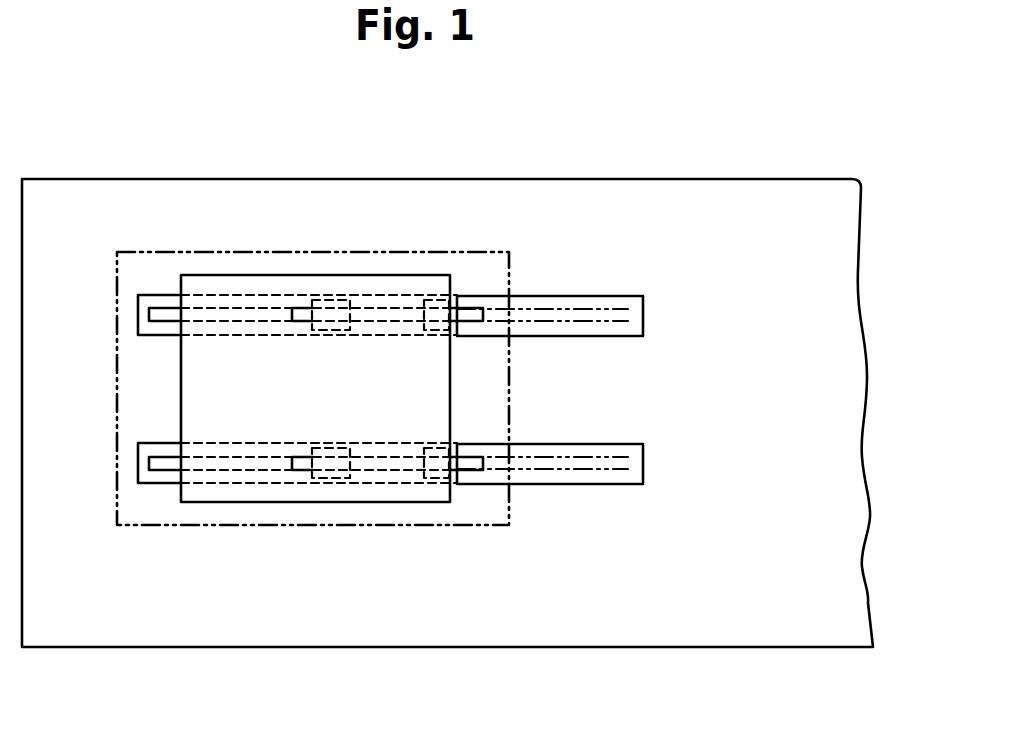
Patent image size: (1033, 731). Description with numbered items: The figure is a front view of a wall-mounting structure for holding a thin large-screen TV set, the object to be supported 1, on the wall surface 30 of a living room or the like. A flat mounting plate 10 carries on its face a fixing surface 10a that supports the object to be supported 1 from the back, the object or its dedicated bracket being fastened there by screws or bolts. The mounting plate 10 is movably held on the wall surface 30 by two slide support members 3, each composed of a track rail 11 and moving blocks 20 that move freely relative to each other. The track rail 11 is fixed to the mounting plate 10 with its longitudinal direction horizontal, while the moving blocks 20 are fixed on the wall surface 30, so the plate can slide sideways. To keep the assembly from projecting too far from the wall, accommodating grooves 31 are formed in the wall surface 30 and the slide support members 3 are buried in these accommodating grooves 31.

The object to be supported 1 is at (489, 252).
The slide support member 3 is at (541, 282).
The mounting plate 10 is at (252, 275).
The fixing surface 10a is at (210, 379).
The track rail 11 is at (162, 308).
The moving block 20 is at (335, 300).
The wall surface 30 is at (772, 205).
The accommodating groove 31 is at (638, 320).